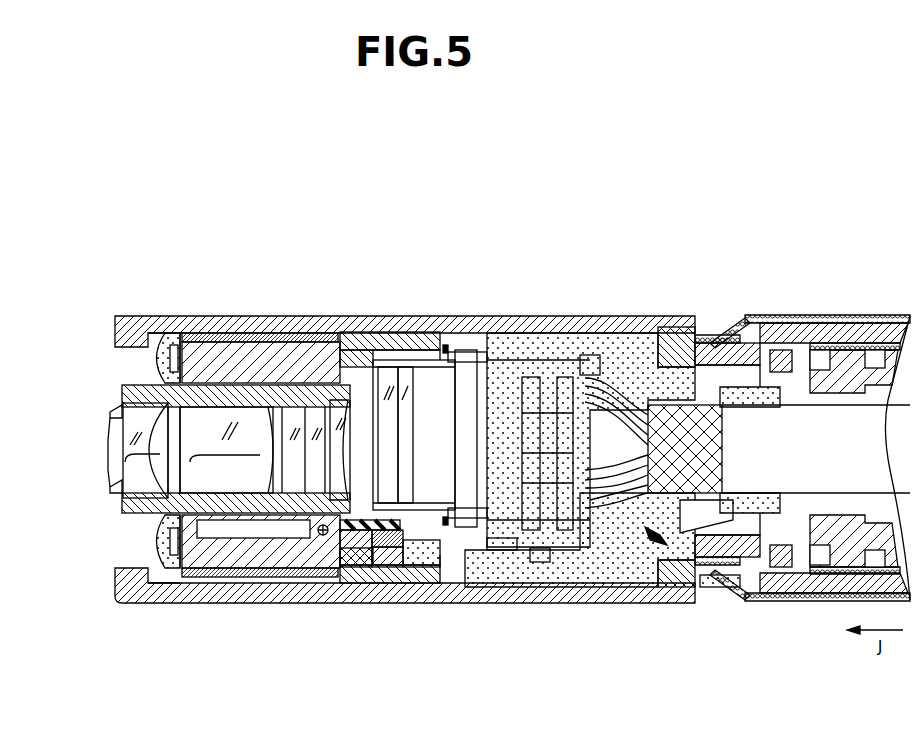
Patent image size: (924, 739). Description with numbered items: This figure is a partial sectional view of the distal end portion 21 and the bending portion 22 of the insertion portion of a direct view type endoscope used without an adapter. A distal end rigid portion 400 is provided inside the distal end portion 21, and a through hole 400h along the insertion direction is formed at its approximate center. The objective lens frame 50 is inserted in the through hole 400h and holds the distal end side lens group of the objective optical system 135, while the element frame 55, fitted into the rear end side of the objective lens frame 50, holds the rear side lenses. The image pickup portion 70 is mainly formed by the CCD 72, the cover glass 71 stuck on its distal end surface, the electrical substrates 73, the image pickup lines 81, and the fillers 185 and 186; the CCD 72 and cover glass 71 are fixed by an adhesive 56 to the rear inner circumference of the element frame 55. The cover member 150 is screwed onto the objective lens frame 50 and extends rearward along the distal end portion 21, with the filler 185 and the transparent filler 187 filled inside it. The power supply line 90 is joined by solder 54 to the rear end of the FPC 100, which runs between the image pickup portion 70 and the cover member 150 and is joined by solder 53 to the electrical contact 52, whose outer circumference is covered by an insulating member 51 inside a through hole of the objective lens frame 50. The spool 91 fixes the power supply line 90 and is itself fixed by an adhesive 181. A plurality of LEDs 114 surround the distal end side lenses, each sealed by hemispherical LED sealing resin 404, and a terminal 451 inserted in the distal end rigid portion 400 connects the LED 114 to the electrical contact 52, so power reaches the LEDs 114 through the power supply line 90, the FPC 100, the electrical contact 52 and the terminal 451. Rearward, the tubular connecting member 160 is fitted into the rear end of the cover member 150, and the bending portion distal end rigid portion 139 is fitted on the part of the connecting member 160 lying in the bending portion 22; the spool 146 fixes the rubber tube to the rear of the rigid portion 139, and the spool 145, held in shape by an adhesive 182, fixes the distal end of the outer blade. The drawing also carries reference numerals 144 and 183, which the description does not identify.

The distal end portion 21 is at (113, 212).
The bending portion 22 is at (693, 212).
The objective lens frame 50 is at (345, 345).
The insulating member 51 is at (355, 562).
The electrical contact 52 is at (420, 545).
The solder 53 is at (440, 556).
The solder 54 is at (652, 545).
The element frame 55 is at (370, 338).
The adhesive 56 is at (457, 350).
The image pickup portion 70 is at (463, 248).
The cover glass 71 is at (468, 365).
The image pickup device 72 is at (500, 365).
The electrical substrates 73 is at (560, 376).
The image pickup lines 81 is at (625, 400).
The power supply line 90 is at (755, 570).
The spool 91 is at (795, 567).
The flexible substrate 100 is at (515, 470).
The LEDs 114 is at (172, 585).
The objective optical system 135 is at (216, 345).
The bending portion distal end rigid portion 139 is at (757, 352).
The front frame 144 is at (180, 334).
The spool 145 is at (717, 345).
The spool 146 is at (796, 332).
The cover member 150 is at (510, 570).
The connecting member 160 is at (688, 342).
The adhesive 181 is at (838, 585).
The adhesive 182 is at (705, 588).
The spacer ring 183 is at (455, 562).
The filler 185 is at (668, 577).
The filler 186 is at (590, 365).
The filler 187 is at (505, 550).
The distal end rigid portion 400 is at (295, 556).
The through hole 400h is at (280, 337).
The LED sealing resin 404 is at (158, 360).
The terminal 451 is at (228, 538).